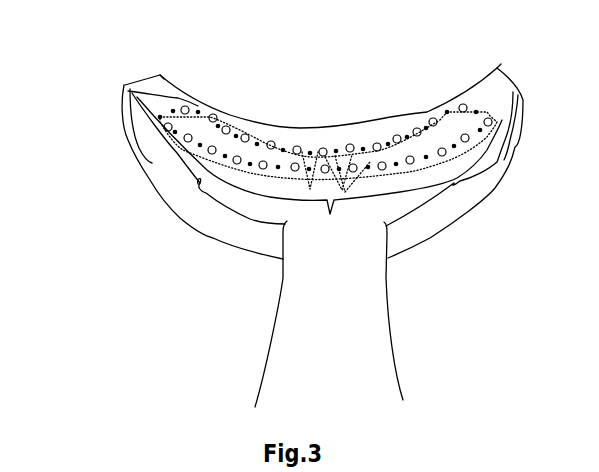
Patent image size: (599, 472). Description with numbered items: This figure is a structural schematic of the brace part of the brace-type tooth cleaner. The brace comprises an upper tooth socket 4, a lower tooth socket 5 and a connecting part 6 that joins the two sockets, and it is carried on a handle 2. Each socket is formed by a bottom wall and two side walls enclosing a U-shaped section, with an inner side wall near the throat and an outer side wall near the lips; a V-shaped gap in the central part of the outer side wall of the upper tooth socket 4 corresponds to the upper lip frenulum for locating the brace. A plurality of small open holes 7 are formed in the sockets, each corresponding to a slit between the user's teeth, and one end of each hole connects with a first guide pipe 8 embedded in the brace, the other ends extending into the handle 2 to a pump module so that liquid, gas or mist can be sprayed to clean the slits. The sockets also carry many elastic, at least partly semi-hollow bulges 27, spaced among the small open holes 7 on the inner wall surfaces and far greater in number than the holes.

The handle 2 is at (329, 314).
The upper tooth socket 4 is at (124, 85).
The lower tooth socket 5 is at (260, 237).
The connecting part 6 is at (232, 203).
The small open holes 7 is at (463, 108).
The first guide pipes 8 is at (345, 192).
The bulges 27 is at (430, 130).